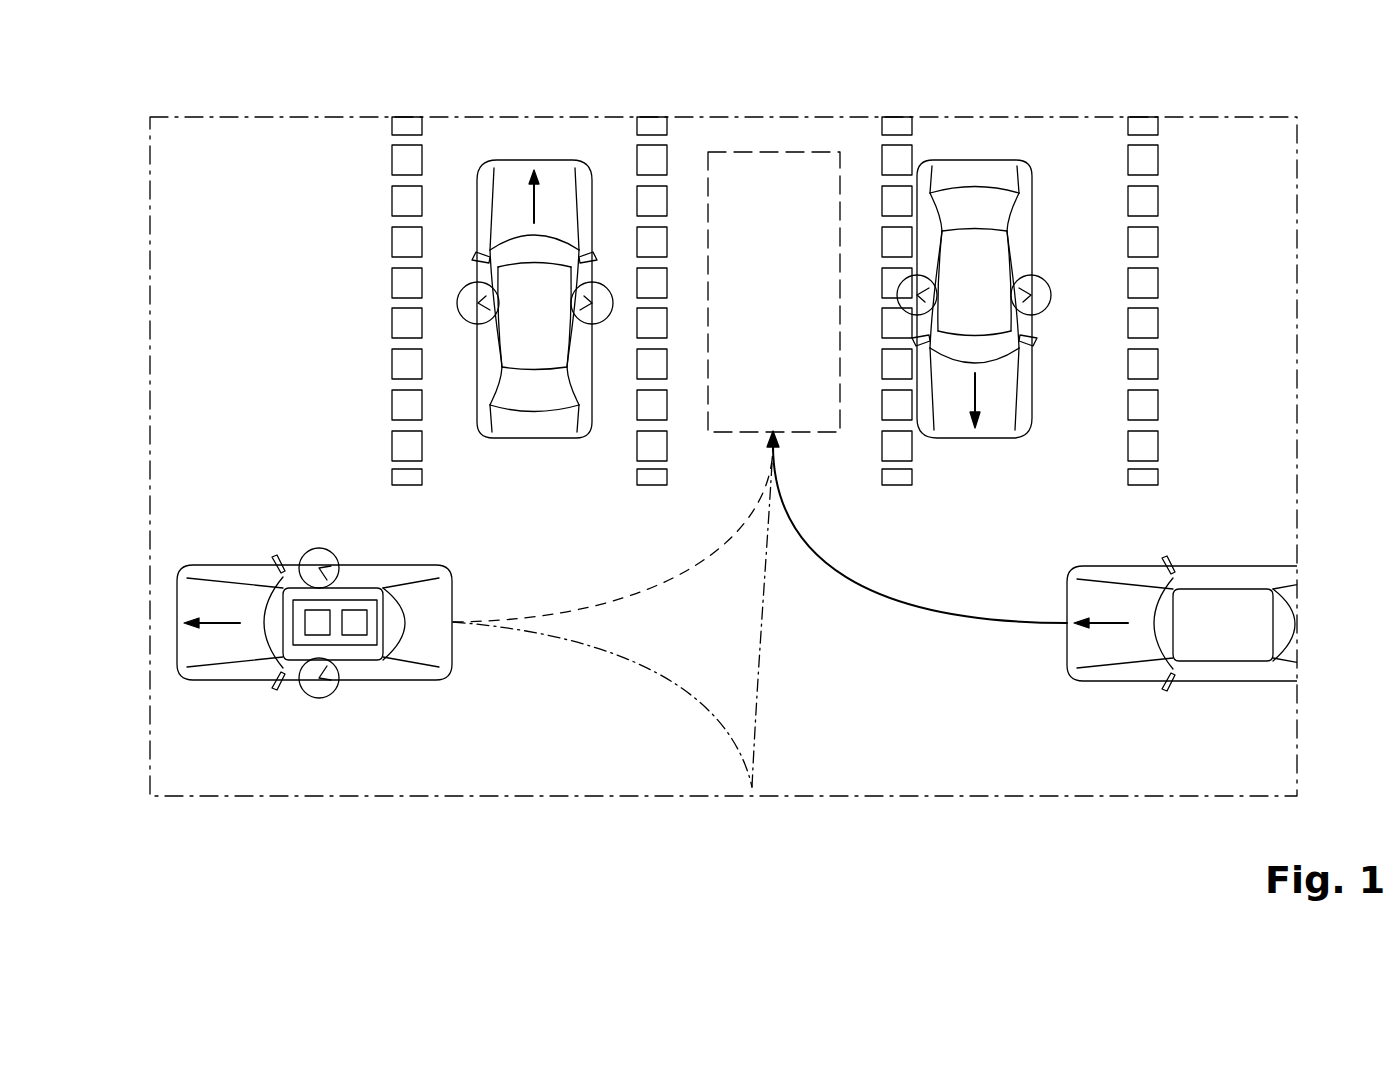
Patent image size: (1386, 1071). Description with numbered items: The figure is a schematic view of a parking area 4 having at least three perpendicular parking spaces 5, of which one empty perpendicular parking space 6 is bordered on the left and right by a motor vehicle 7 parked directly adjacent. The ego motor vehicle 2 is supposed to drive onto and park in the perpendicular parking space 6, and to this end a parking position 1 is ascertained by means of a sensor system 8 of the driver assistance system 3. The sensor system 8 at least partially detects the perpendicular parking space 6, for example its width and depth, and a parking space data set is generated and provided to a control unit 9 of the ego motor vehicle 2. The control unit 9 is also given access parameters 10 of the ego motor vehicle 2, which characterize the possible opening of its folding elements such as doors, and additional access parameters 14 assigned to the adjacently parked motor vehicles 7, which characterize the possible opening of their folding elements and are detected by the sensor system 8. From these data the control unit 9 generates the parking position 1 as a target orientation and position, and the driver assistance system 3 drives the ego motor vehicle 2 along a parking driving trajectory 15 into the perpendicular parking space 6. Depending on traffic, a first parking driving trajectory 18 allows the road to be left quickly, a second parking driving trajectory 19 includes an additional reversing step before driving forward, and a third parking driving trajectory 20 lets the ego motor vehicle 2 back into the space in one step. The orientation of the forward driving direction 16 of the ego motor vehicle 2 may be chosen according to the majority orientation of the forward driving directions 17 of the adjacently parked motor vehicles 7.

The parking position 1 is at (756, 152).
The ego motor vehicle 2 is at (172, 682).
The driver assistance system 3 is at (370, 600).
The parking area 4 is at (200, 305).
The perpendicular parking spaces 5 is at (442, 136).
The perpendicular parking space 6 is at (682, 134).
The motor vehicle 7 is at (450, 408).
The sensor system 8 is at (349, 626).
The control unit 9 is at (315, 626).
The access parameters 10 is at (320, 548).
The additional access parameters 14 is at (457, 303).
The parking driving trajectory 15 is at (731, 609).
The forward driving direction 16 is at (225, 627).
The forward driving direction 17 is at (534, 206).
The first parking driving trajectory 18 is at (908, 605).
The second parking driving trajectory 19 is at (632, 650).
The third parking driving trajectory 20 is at (597, 610).